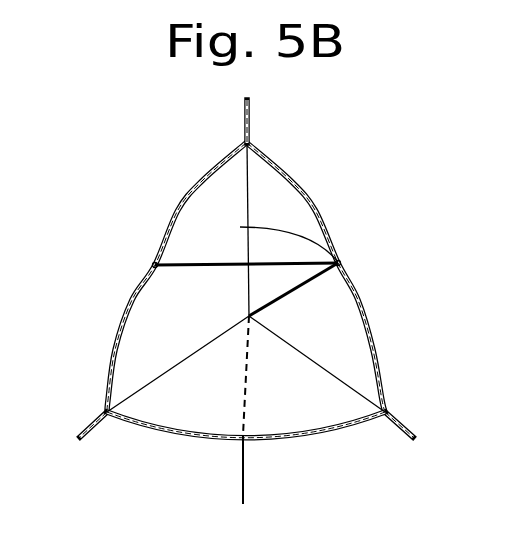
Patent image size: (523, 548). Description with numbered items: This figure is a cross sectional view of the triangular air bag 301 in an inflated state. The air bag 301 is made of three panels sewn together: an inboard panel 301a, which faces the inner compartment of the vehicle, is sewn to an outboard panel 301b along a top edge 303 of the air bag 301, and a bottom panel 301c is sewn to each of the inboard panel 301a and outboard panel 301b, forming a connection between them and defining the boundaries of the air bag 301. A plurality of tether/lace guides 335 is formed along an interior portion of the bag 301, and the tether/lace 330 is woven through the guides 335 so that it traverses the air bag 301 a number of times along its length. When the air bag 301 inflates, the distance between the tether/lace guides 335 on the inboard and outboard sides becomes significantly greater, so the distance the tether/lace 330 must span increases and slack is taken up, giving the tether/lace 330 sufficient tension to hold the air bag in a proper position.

The triangular air bag 301 is at (246, 298).
The inboard panel 301a is at (343, 262).
The outboard panel 301b is at (152, 263).
The bottom panel 301c is at (143, 424).
The top edge 303 is at (250, 141).
The tether/lace 330 is at (170, 267).
The tether/lace guides 335 is at (158, 260).